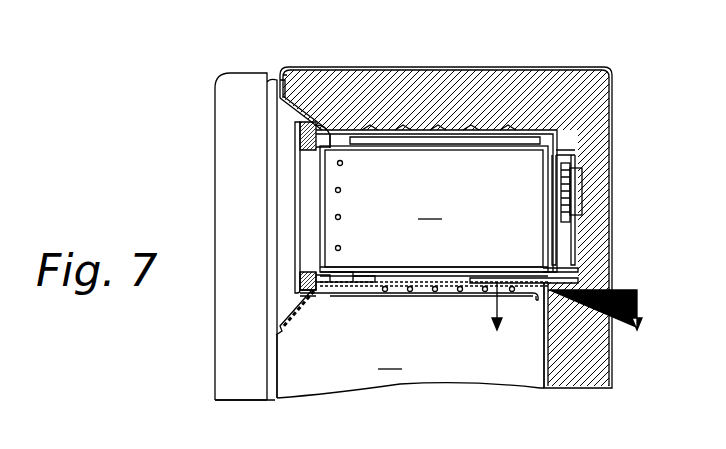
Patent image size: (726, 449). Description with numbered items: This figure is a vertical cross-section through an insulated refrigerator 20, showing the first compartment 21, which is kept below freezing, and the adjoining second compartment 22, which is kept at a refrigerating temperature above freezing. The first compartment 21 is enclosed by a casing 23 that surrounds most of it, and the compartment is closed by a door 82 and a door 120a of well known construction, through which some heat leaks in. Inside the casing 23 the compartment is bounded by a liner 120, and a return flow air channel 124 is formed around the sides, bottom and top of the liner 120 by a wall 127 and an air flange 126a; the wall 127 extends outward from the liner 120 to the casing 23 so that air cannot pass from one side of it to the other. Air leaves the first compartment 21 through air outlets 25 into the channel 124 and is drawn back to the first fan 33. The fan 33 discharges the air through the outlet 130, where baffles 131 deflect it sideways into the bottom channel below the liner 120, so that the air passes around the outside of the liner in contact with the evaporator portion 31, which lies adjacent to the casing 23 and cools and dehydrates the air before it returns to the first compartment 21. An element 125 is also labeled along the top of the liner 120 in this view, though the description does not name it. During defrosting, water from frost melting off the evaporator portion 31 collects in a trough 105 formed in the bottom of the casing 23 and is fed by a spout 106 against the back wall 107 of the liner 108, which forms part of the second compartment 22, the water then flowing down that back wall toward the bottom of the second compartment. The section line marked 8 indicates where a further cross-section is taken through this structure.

The insulated refrigerator 20 is at (380, 67).
The first compartment 21 is at (434, 209).
The second compartment 22 is at (379, 367).
The casing 23 is at (528, 128).
The air outlets 25 is at (341, 217).
The evaporator portion 31 is at (436, 294).
The first fan 33 is at (568, 197).
The door 82 is at (226, 96).
The trough 105 is at (470, 298).
The spout 106 is at (530, 300).
The back wall 107 is at (543, 386).
The liner 108 is at (335, 372).
The liner 120 is at (470, 266).
The door 120a is at (296, 202).
The return flow air channel 124 is at (348, 279).
The top strip 125 is at (395, 138).
The air flange 126a is at (320, 132).
The wall 127 is at (487, 138).
The outlet 130 is at (548, 286).
The baffles 131 is at (397, 286).
The section line 8- 8 is at (566, 326).